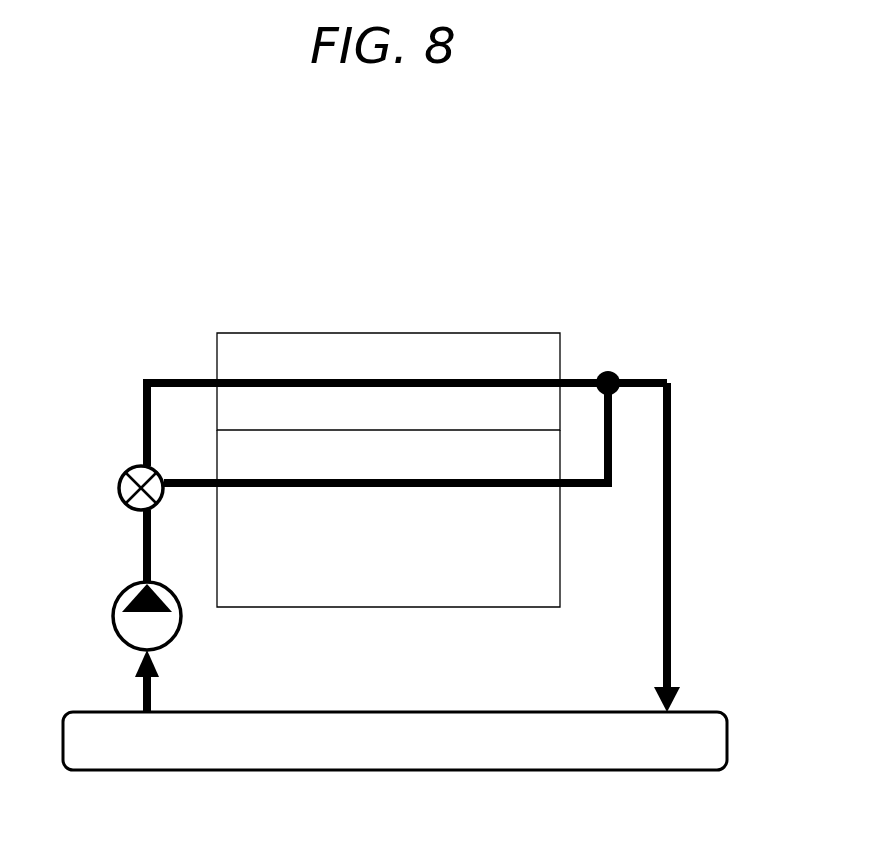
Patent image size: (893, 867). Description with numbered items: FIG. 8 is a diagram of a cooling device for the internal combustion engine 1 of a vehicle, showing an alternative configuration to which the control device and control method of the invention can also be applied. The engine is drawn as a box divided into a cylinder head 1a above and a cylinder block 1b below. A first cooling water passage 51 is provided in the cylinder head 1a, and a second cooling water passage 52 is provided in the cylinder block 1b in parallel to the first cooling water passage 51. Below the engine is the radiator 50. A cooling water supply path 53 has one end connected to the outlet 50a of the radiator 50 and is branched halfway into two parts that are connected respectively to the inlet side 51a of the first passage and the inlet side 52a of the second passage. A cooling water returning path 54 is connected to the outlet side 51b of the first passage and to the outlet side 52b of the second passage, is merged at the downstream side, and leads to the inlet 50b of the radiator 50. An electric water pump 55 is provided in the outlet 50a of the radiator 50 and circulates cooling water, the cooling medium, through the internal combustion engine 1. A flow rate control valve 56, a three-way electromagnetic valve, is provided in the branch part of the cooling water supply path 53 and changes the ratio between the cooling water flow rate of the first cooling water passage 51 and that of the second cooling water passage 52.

The internal combustion engine 1 is at (388, 410).
The cylinder head 1a is at (440, 350).
The cylinder block 1b is at (530, 598).
The radiator 50 is at (460, 770).
The outlet of radiator 50a is at (140, 708).
The inlet of radiator 50b is at (676, 708).
The first cooling water passage 51 is at (407, 345).
The inlet side of first cooling water passage 51a is at (213, 378).
The outlet side of first cooling water passage 51b is at (563, 378).
The second cooling water passage 52 is at (400, 526).
The inlet side of second cooling water passage 52a is at (212, 488).
The outlet side of second cooling water passage 52b is at (562, 490).
The cooling water supply path 53 is at (143, 545).
The cooling water returning path 54 is at (670, 520).
The electric water pump 55 is at (110, 617).
The flow rate control valve 56 is at (118, 482).